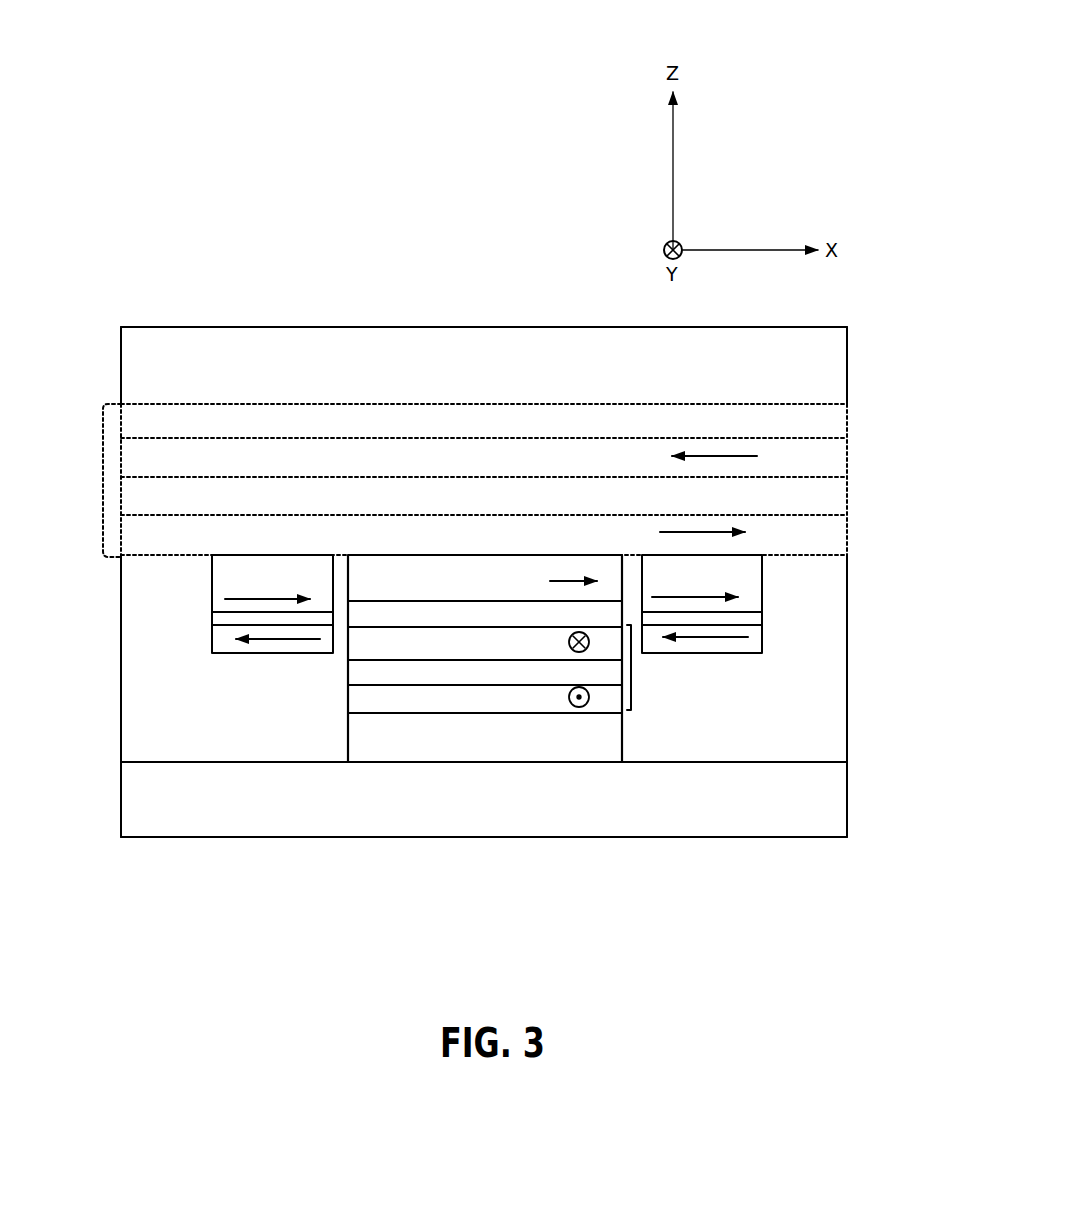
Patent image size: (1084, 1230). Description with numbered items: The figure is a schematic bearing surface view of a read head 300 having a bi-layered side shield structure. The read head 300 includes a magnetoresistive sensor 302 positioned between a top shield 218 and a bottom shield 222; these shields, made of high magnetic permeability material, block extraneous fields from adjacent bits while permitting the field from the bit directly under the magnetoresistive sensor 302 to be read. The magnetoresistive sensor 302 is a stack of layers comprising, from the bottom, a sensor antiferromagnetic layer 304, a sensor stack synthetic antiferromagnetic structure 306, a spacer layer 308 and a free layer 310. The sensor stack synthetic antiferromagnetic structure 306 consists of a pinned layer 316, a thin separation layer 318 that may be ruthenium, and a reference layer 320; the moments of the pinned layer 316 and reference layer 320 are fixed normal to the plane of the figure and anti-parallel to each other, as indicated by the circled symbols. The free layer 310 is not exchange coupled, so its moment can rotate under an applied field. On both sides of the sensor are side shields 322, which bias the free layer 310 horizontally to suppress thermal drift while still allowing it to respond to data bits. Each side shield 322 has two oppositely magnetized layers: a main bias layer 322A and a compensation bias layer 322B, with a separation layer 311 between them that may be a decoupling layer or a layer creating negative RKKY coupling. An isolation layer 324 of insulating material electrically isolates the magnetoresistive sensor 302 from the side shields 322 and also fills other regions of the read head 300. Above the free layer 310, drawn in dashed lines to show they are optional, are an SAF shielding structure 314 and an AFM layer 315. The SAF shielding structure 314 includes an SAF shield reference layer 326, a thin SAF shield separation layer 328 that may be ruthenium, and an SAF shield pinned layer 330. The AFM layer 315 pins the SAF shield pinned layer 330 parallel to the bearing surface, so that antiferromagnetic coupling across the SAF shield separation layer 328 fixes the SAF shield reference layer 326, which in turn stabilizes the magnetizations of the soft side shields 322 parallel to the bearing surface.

The read head 300 is at (434, 218).
The magnetoresistive sensor 302 is at (884, 638).
The sensor antiferromagnetic layer 304 is at (426, 749).
The sensor stack synthetic antiferromagnetic structure 306 is at (528, 766).
The spacer layer 308 is at (426, 622).
The free layer 310 is at (426, 587).
The separation layer 311 is at (212, 617).
The SAF shielding structure 314 is at (103, 480).
The AFM layer 315 is at (603, 430).
The pinned layer 316 is at (426, 707).
The separation layer 318 is at (426, 682).
The reference layer 320 is at (426, 654).
The side shields 322 is at (495, 641).
The main bias layer 322A is at (289, 585).
The compensation bias layer 322B is at (898, 712).
The isolation layer 324 is at (337, 558).
The SAF shield reference layer 326 is at (603, 539).
The SAF shield separation layer 328 is at (603, 504).
The SAF shield pinned layer 330 is at (603, 467).
The top shield 218 is at (603, 374).
The bottom shield 222 is at (593, 806).